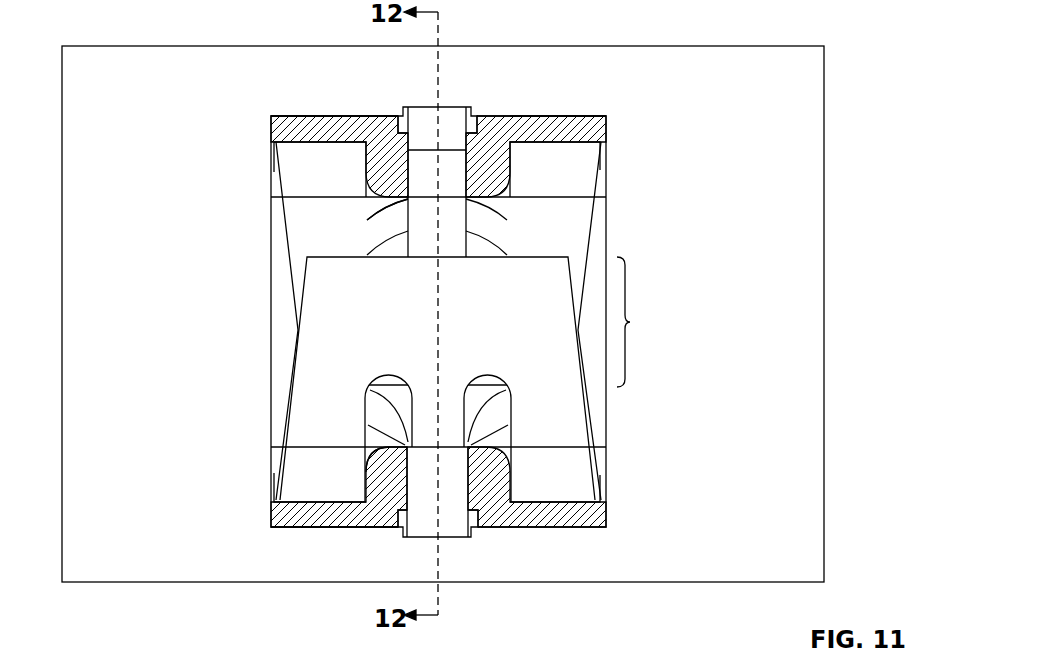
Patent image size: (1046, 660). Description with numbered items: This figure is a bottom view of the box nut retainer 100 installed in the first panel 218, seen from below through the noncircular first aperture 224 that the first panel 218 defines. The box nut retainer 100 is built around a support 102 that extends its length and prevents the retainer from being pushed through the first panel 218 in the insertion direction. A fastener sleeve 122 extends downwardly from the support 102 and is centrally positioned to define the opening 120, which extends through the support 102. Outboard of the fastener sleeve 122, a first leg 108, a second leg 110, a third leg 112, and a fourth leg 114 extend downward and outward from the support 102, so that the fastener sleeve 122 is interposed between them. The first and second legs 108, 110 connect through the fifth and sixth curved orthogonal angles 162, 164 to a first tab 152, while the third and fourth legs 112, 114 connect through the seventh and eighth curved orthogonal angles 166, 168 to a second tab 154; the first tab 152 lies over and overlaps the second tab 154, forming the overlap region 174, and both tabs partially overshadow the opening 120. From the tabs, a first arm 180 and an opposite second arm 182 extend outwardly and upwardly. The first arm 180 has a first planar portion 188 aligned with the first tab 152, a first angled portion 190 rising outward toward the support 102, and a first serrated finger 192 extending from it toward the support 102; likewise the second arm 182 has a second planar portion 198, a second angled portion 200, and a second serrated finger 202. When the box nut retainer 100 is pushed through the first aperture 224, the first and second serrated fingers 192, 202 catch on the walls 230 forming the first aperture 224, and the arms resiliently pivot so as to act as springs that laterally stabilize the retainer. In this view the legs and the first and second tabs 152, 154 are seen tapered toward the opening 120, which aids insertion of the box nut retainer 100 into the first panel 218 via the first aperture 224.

The box nut retainer 100 is at (550, 503).
The support 102 is at (290, 337).
The first leg 108 is at (585, 127).
The second leg 110 is at (310, 138).
The third leg 112 is at (580, 512).
The fourth leg 114 is at (318, 522).
The opening 120 is at (399, 249).
The fastener sleeve 122 is at (375, 410).
The first tab 152 is at (488, 385).
The second tab 154 is at (510, 300).
The fifth curved orthogonal angle 162 is at (583, 158).
The sixth curved orthogonal angle 164 is at (293, 162).
The seventh curved orthogonal angle 166 is at (567, 492).
The eighth curved orthogonal angle 168 is at (297, 470).
The overlap region 174 is at (649, 322).
The first arm 180 is at (453, 178).
The second arm 182 is at (455, 470).
The first planar portion 188 is at (393, 240).
The first angled portion 190 is at (447, 130).
The first serrated finger 192 is at (420, 110).
The second planar portion 198 is at (407, 450).
The second angled portion 200 is at (425, 530).
The second serrated finger 202 is at (457, 538).
The first panel 218 is at (693, 60).
The first aperture 224 is at (546, 126).
The walls 230 is at (352, 112).